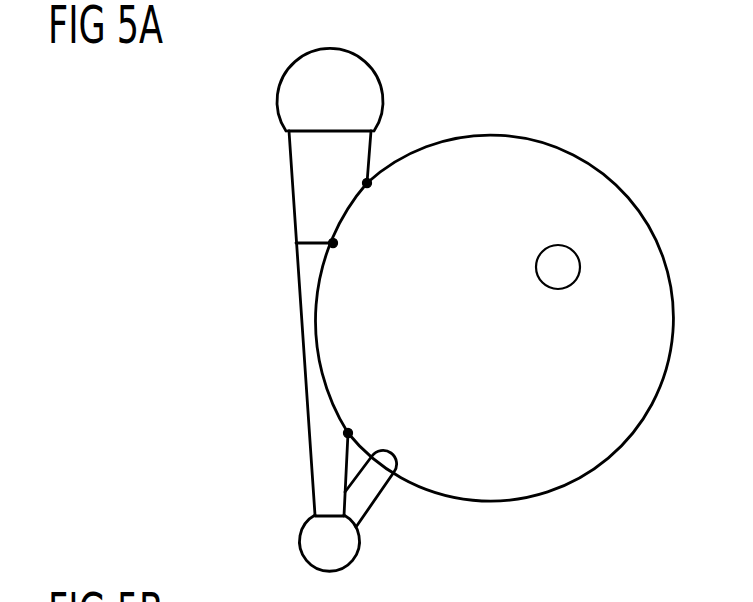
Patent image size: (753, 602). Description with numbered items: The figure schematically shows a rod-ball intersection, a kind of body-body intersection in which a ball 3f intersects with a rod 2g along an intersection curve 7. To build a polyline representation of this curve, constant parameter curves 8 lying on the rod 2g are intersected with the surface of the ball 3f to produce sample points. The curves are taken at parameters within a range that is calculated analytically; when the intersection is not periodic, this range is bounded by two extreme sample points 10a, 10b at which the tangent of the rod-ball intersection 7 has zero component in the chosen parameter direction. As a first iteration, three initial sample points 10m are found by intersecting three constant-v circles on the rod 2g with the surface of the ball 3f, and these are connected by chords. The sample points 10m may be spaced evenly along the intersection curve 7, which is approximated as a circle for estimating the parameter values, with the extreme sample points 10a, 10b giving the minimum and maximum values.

The rod 2g is at (291, 149).
The ball 3f is at (488, 145).
The intersection curve 7 is at (325, 387).
The constant parameter curve 8 is at (296, 243).
The extreme sample point 10a is at (348, 433).
The extreme sample point 10b is at (367, 183).
The initial sample point 10m is at (336, 243).